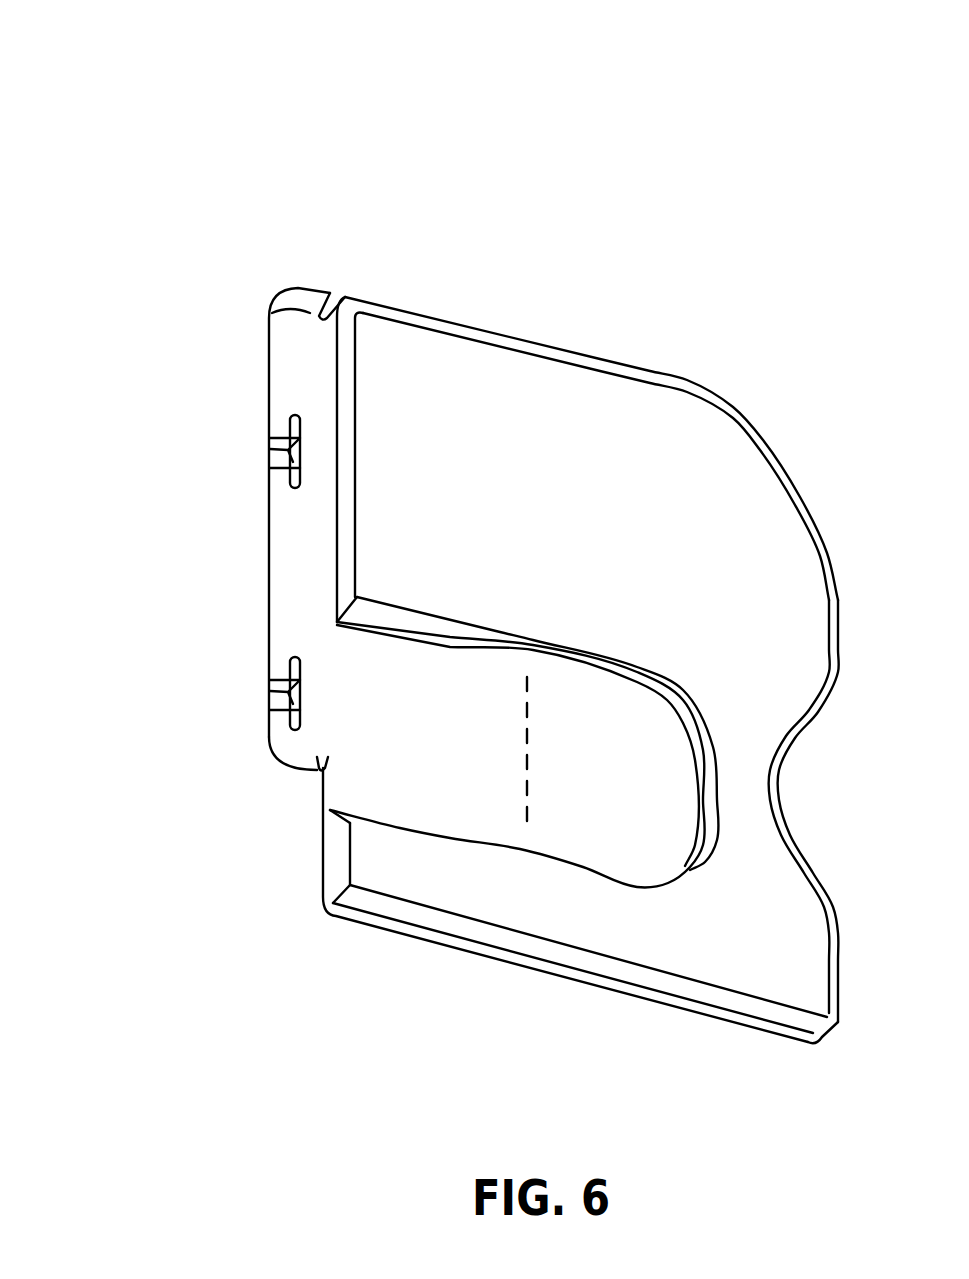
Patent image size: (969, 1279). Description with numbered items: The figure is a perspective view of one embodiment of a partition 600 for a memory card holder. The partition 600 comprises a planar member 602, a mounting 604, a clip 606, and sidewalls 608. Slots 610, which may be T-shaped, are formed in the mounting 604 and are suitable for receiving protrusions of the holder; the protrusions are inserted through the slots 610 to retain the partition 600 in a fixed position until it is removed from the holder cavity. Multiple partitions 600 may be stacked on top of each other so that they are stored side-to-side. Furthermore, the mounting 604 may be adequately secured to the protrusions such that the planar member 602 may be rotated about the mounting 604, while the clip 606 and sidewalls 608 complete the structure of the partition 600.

The partition 600 is at (143, 80).
The planar member 602 is at (767, 490).
The mounting 604 is at (287, 330).
The clip 606 is at (657, 857).
The sidewalls 608 is at (350, 338).
The slots 610 is at (296, 468).